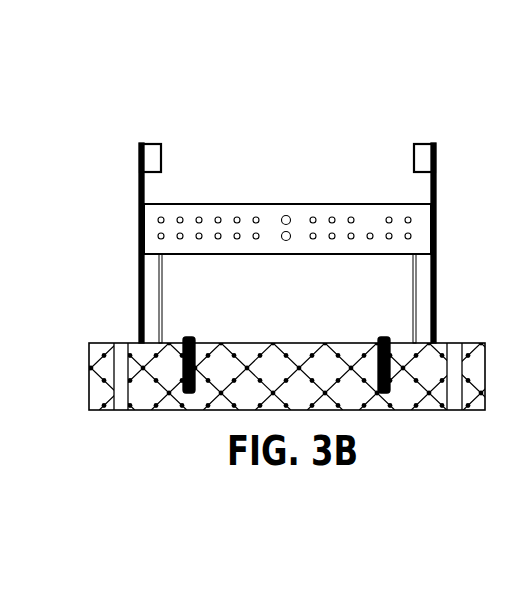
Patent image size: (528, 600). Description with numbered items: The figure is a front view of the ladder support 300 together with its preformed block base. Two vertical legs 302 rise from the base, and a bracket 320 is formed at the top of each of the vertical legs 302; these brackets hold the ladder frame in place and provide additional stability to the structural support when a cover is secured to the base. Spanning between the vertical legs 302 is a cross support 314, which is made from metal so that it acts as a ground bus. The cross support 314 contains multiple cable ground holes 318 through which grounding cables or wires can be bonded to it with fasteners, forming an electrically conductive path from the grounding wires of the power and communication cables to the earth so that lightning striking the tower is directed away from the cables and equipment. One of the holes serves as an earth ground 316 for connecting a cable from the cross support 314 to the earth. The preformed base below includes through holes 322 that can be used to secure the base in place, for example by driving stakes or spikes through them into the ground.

The ladder support 300 is at (384, 114).
The vertical legs 302 is at (436, 297).
The cross support 314 is at (308, 204).
The earth ground 316 is at (290, 241).
The cable ground holes 318 is at (371, 241).
The bracket 320 is at (143, 143).
The through holes 322 is at (118, 412).